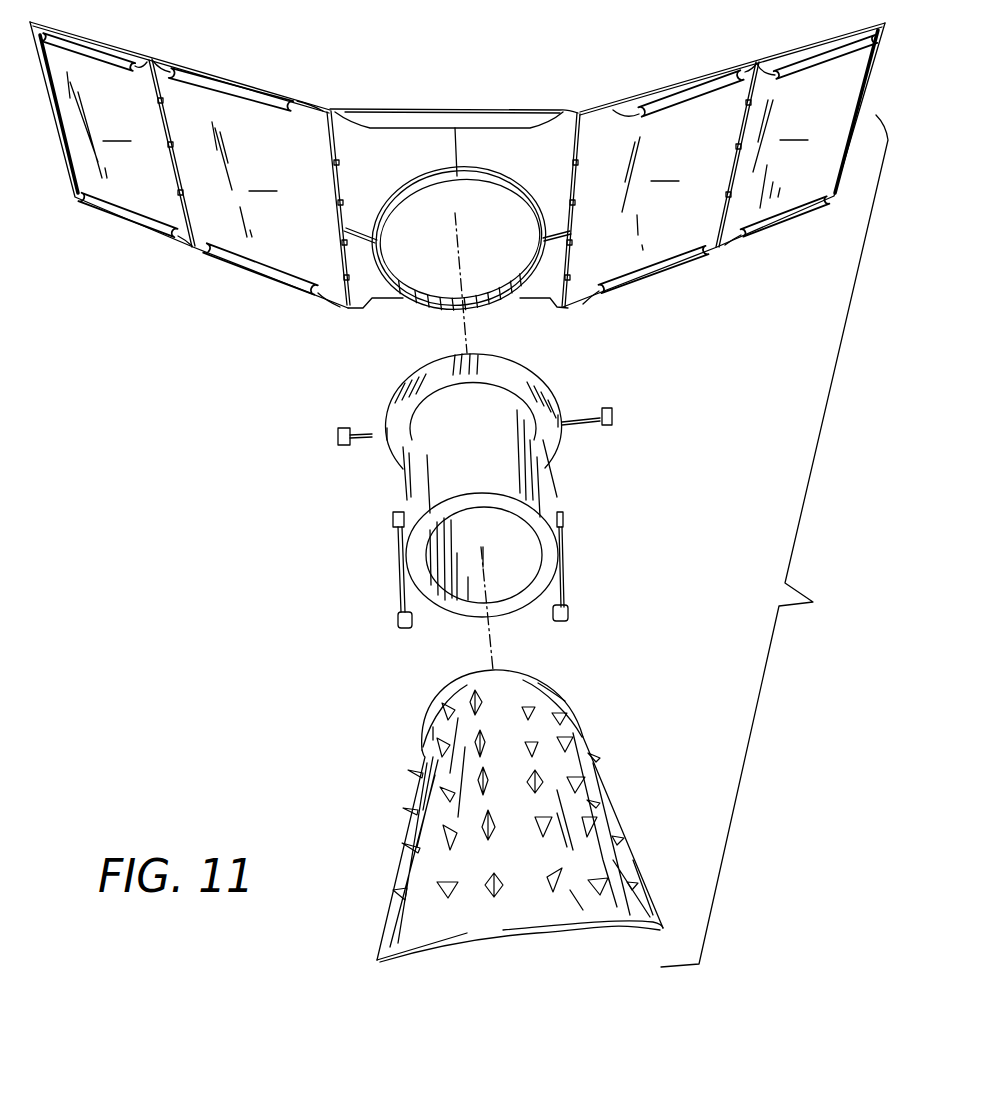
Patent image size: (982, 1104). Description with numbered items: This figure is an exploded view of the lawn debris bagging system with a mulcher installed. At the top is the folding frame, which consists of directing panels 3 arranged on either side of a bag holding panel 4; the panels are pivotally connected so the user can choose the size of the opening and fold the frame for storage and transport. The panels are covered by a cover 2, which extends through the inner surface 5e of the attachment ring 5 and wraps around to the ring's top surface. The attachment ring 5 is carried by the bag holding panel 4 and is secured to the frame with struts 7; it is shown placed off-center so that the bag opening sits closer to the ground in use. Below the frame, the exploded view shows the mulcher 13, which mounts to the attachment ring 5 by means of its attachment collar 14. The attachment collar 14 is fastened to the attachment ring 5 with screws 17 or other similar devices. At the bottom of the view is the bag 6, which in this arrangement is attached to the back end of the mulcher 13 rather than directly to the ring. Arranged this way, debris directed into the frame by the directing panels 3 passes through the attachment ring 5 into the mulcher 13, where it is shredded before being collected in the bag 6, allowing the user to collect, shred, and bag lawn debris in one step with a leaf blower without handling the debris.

The cover 2 is at (437, 161).
The directing panels 3 is at (137, 52).
The bag holding panel 4 is at (445, 108).
The attachment ring 5 is at (454, 402).
The inner surface 5e is at (431, 304).
The bag 6 is at (437, 797).
The struts 7 is at (360, 230).
The mulcher 13 is at (512, 444).
The attachment collar 14 is at (533, 383).
The screws 17 is at (613, 414).